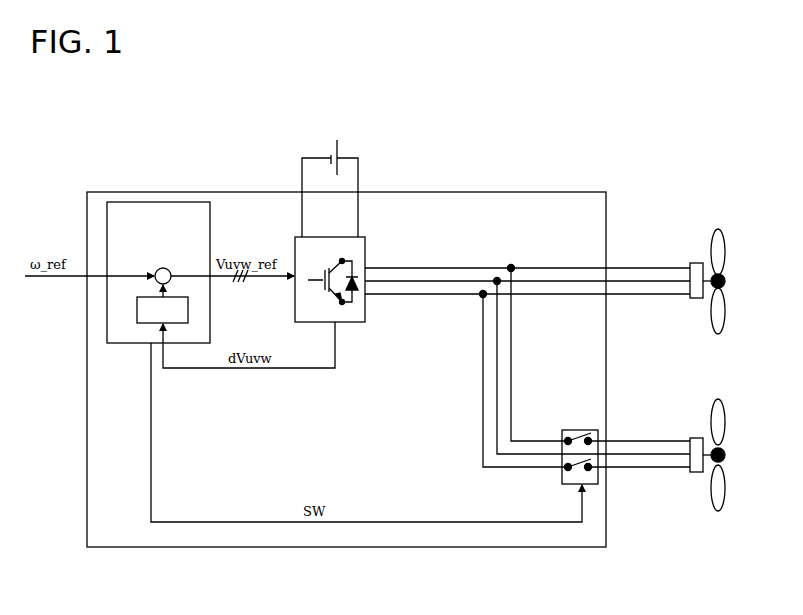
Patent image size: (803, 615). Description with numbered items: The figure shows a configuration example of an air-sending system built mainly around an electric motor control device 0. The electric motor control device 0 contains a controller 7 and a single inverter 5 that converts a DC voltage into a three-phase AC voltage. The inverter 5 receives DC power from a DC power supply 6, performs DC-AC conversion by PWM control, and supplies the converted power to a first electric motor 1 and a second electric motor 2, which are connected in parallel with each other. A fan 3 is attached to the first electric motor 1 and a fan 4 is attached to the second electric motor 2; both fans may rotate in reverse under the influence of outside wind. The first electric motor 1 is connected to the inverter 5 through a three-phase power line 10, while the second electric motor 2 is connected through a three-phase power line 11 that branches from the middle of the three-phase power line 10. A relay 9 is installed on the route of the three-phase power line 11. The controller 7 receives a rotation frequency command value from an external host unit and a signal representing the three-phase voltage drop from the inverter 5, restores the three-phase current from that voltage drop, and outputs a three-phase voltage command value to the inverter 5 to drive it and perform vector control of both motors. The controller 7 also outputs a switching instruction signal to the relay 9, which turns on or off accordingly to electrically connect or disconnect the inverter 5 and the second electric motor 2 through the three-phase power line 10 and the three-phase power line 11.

The electric motor control device 0 is at (553, 548).
The first electric motor 1 is at (690, 263).
The second electric motor 2 is at (690, 438).
The fan 3 is at (723, 231).
The fan 4 is at (723, 402).
The inverter 5 is at (366, 318).
The DC power supply 6 is at (340, 150).
The controller 7 is at (132, 345).
The relay 9 is at (571, 430).
The three-phase power line 10 is at (620, 262).
The three-phase power line 11 is at (503, 352).